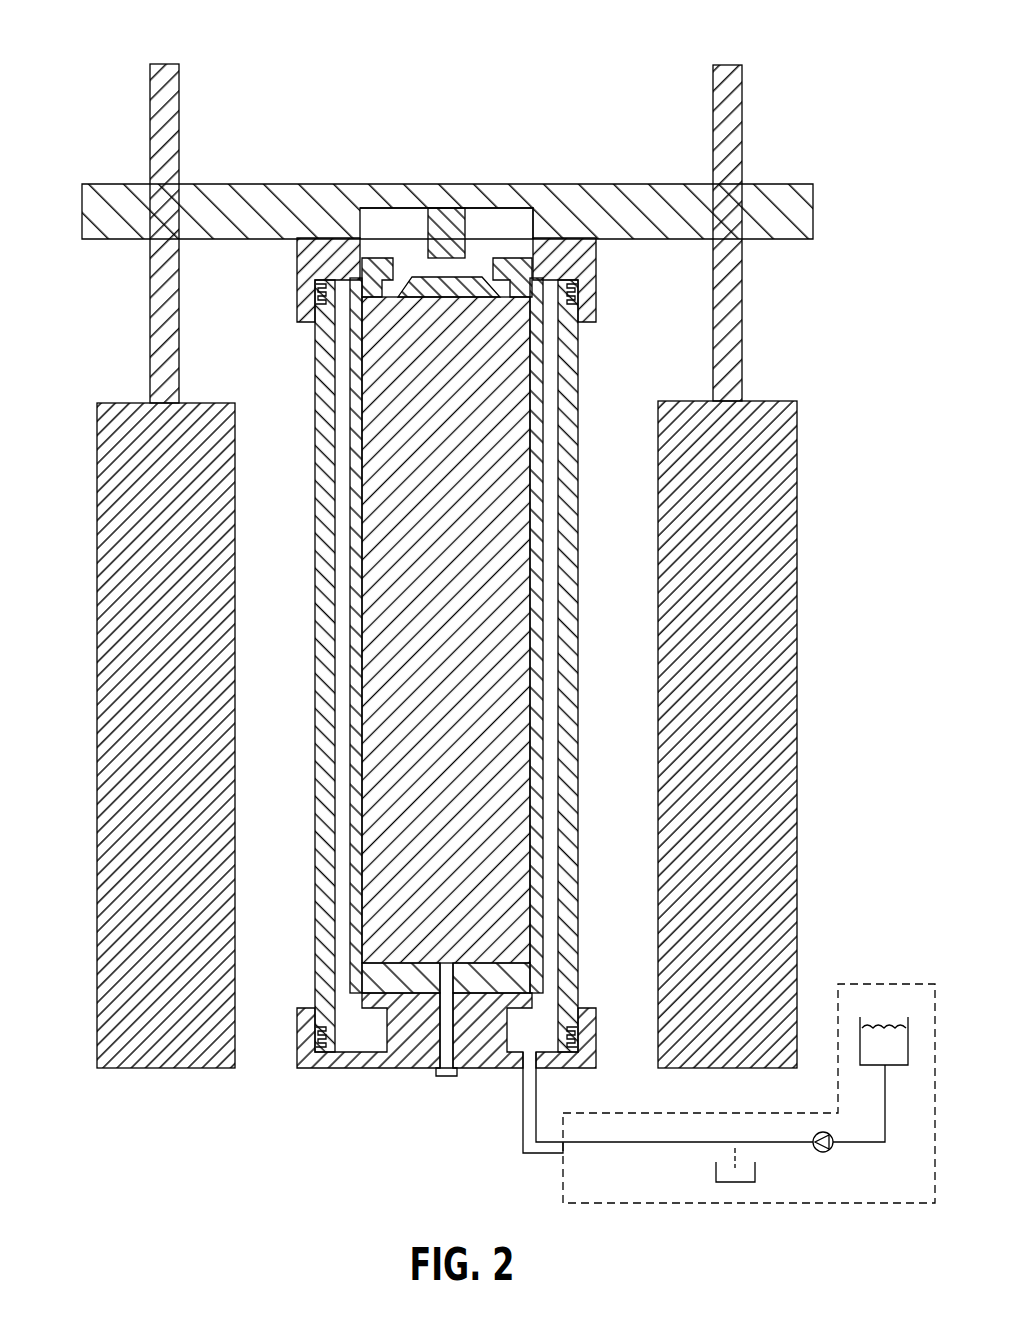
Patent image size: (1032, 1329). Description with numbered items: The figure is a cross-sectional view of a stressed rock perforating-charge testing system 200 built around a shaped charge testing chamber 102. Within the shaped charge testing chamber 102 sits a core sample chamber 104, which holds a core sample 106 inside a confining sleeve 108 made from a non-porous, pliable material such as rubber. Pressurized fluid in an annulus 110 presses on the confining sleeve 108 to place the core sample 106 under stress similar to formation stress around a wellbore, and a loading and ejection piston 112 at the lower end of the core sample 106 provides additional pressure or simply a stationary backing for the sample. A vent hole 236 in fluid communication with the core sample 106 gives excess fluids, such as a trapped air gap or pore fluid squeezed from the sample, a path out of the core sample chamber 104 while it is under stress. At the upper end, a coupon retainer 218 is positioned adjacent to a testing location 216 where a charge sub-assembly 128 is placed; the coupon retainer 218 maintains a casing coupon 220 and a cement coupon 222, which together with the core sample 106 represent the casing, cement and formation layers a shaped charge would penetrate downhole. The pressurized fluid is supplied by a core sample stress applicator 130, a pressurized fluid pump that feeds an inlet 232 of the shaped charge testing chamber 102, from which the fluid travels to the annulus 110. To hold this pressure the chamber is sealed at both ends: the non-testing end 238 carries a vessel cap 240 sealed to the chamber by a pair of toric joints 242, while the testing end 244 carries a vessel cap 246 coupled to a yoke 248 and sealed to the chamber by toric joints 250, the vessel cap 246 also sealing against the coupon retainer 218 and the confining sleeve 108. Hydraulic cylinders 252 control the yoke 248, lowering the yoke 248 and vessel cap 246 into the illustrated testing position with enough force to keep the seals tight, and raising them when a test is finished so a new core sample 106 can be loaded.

The stressed rock perforating-charge testing system 200 is at (278, 68).
The testing end 244 is at (552, 135).
The yoke 248 is at (232, 197).
The coupon retainer 218 is at (372, 268).
The testing location 216 is at (388, 208).
The charge sub-assembly 128 is at (450, 205).
The casing coupon 220 is at (486, 285).
The cement coupon 222 is at (465, 288).
The vessel cap 246 is at (590, 262).
The toric joints 250 is at (574, 293).
The confining sleeve 108 is at (545, 352).
The core sample chamber 104 is at (548, 414).
The shaped charge testing chamber 102 is at (567, 472).
The core sample 106 is at (516, 605).
The annulus 110 is at (562, 765).
The vent hole 236 is at (444, 978).
The loading and ejection piston 112 is at (518, 982).
The toric joints 242 is at (316, 1035).
The non-testing end 238 is at (283, 1090).
The vessel cap 240 is at (325, 1062).
The inlet 232 is at (522, 1098).
The hydraulic cylinders 252 is at (107, 445).
The core sample stress applicator 130 is at (833, 1204).